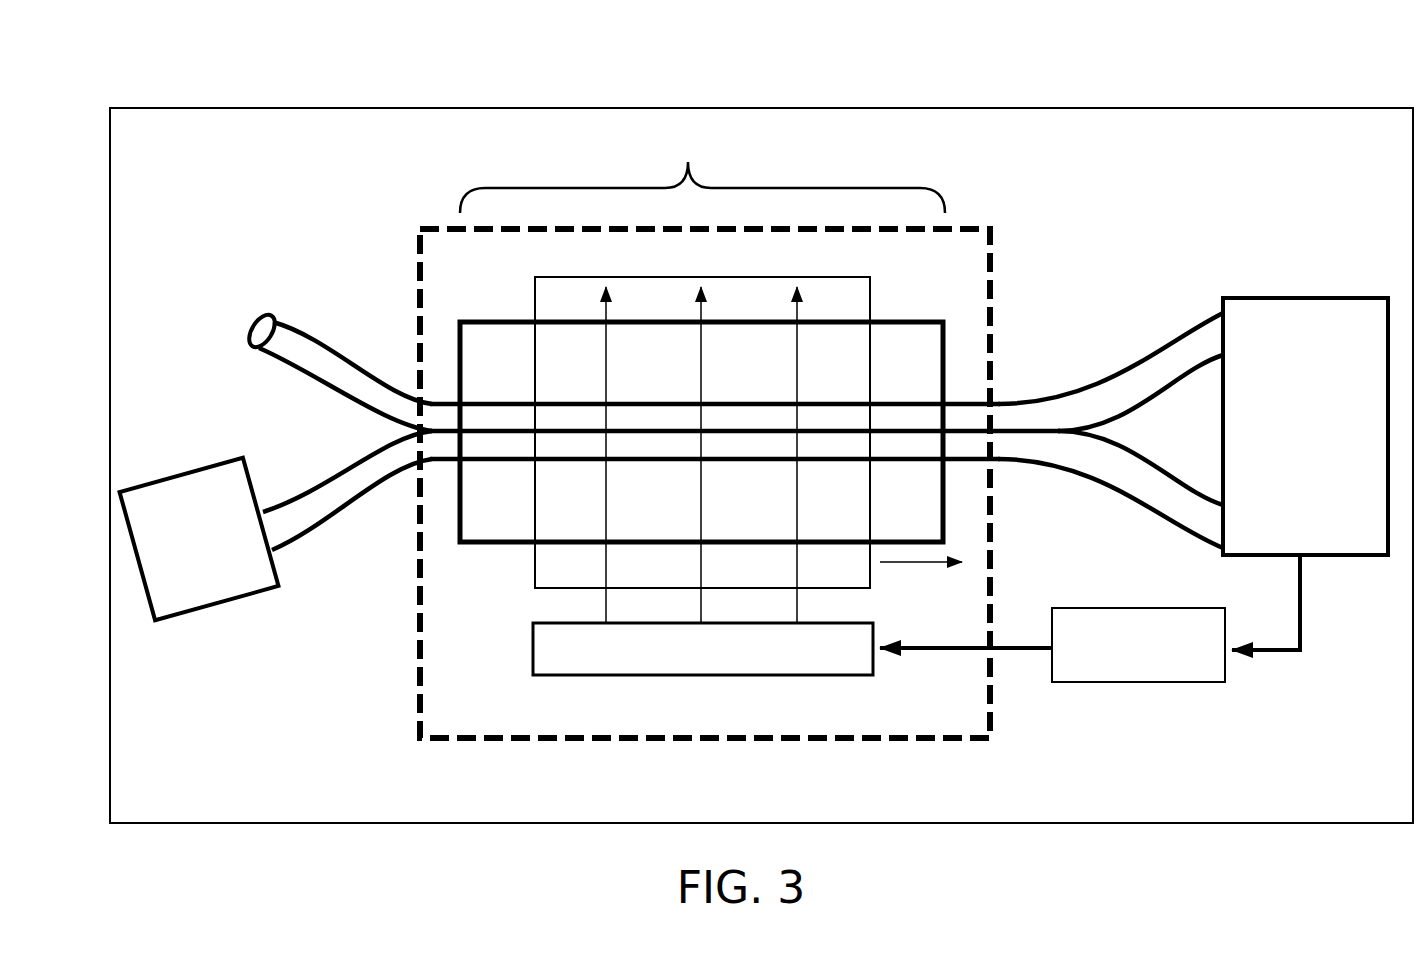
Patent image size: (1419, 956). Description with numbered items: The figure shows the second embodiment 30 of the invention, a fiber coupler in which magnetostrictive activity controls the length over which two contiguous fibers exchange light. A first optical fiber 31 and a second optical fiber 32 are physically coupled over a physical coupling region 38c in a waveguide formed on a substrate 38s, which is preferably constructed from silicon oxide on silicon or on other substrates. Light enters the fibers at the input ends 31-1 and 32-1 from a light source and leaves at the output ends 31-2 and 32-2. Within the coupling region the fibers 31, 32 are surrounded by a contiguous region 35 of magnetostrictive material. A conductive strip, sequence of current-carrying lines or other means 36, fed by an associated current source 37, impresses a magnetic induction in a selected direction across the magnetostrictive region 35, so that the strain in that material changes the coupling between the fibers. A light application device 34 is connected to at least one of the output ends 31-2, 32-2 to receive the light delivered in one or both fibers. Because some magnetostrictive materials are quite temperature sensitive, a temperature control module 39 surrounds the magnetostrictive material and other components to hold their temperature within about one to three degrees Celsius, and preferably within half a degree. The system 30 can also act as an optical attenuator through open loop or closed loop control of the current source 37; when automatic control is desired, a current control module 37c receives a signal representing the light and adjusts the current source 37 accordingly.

The second embodiment 30 is at (1046, 87).
The first optical fiber 31 is at (732, 510).
The input end of first optical fiber 31-1 is at (278, 555).
The output end of first optical fiber 31-2 is at (1208, 554).
The second optical fiber 32 is at (690, 324).
The input end of second optical fiber 32-1 is at (250, 320).
The output end of second optical fiber 32-2 is at (1212, 304).
The light application device 34 is at (1268, 318).
The magnetostrictive region 35 is at (902, 342).
The conductive strip 36 is at (797, 571).
The current source 37 is at (575, 668).
The current control module 37c is at (1147, 676).
The physical coupling region 38c is at (702, 173).
The substrate 38s is at (445, 665).
The temperature control module 39 is at (783, 108).